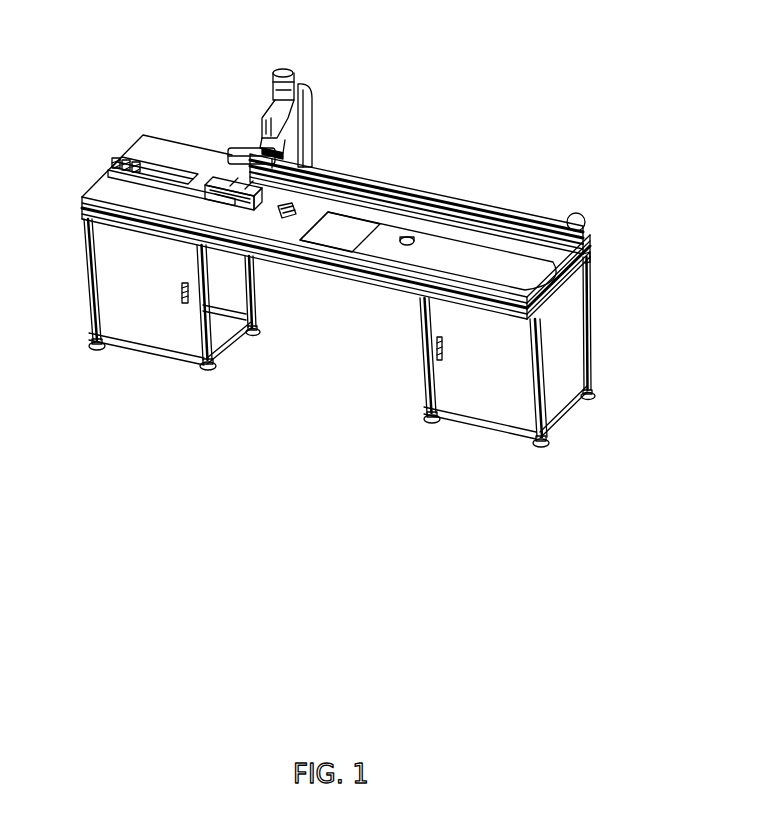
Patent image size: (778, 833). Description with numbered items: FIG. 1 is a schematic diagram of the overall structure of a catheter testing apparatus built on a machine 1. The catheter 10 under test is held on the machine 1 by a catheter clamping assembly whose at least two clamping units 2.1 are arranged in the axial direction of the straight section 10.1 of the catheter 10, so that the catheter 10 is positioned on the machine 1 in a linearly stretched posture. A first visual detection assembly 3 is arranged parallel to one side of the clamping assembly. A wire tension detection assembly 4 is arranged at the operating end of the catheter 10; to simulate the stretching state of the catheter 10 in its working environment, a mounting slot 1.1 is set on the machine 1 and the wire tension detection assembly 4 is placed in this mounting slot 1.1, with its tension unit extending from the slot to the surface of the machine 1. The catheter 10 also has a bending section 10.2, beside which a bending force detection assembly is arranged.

The machine 1 is at (345, 243).
The mounting slot 1.1 is at (157, 178).
The clamping unit 2.1 is at (293, 207).
The first visual detection assembly 3 is at (300, 100).
The wire tension detection assembly 4 is at (220, 185).
The catheter 10 is at (457, 247).
The straight section 10.1 is at (380, 230).
The bending section 10.2 is at (663, 299).